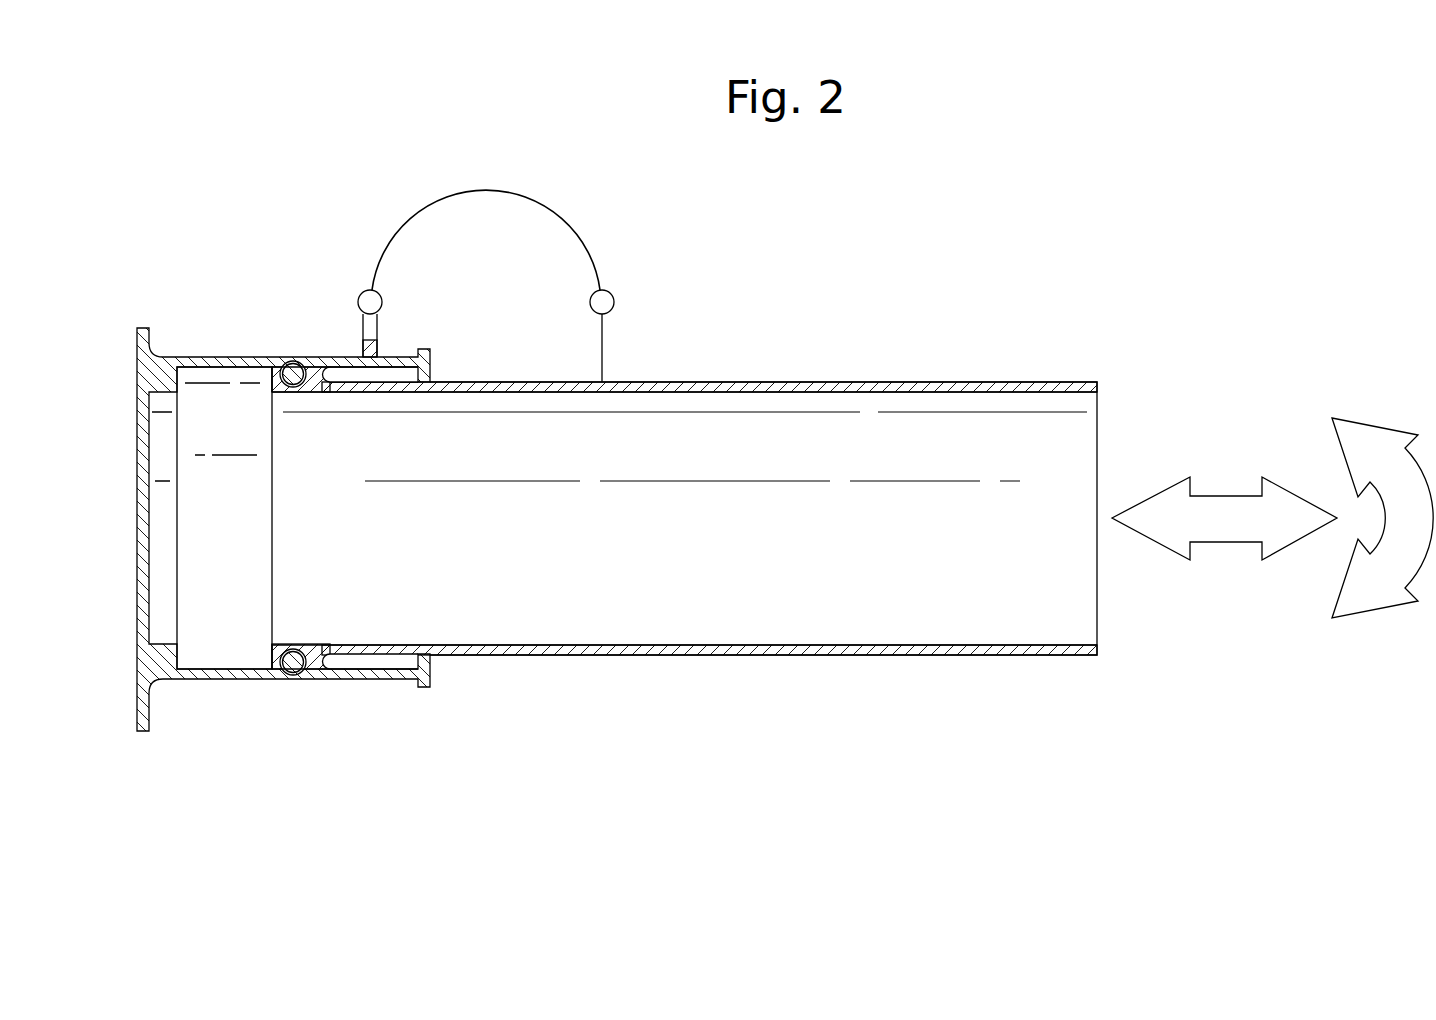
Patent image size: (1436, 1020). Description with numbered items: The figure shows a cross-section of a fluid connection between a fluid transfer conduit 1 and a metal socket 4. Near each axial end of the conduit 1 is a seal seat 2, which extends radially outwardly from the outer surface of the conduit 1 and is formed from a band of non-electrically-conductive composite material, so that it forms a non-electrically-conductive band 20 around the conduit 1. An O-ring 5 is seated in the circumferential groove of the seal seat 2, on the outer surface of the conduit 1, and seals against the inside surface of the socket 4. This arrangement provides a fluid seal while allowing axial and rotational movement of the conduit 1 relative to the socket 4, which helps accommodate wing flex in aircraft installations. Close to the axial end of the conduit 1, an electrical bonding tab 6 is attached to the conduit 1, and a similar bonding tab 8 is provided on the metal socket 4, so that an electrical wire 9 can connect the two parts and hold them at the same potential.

The conduit 1 is at (957, 358).
The seal seat 2 is at (275, 378).
The metal socket 4 is at (227, 679).
The O-ring 5 is at (295, 366).
The electrical bonding tab 6 is at (603, 335).
The bonding tab 8 is at (373, 327).
The electrical wire 9 is at (468, 187).
The non-electrically-conductive band 20 is at (278, 670).